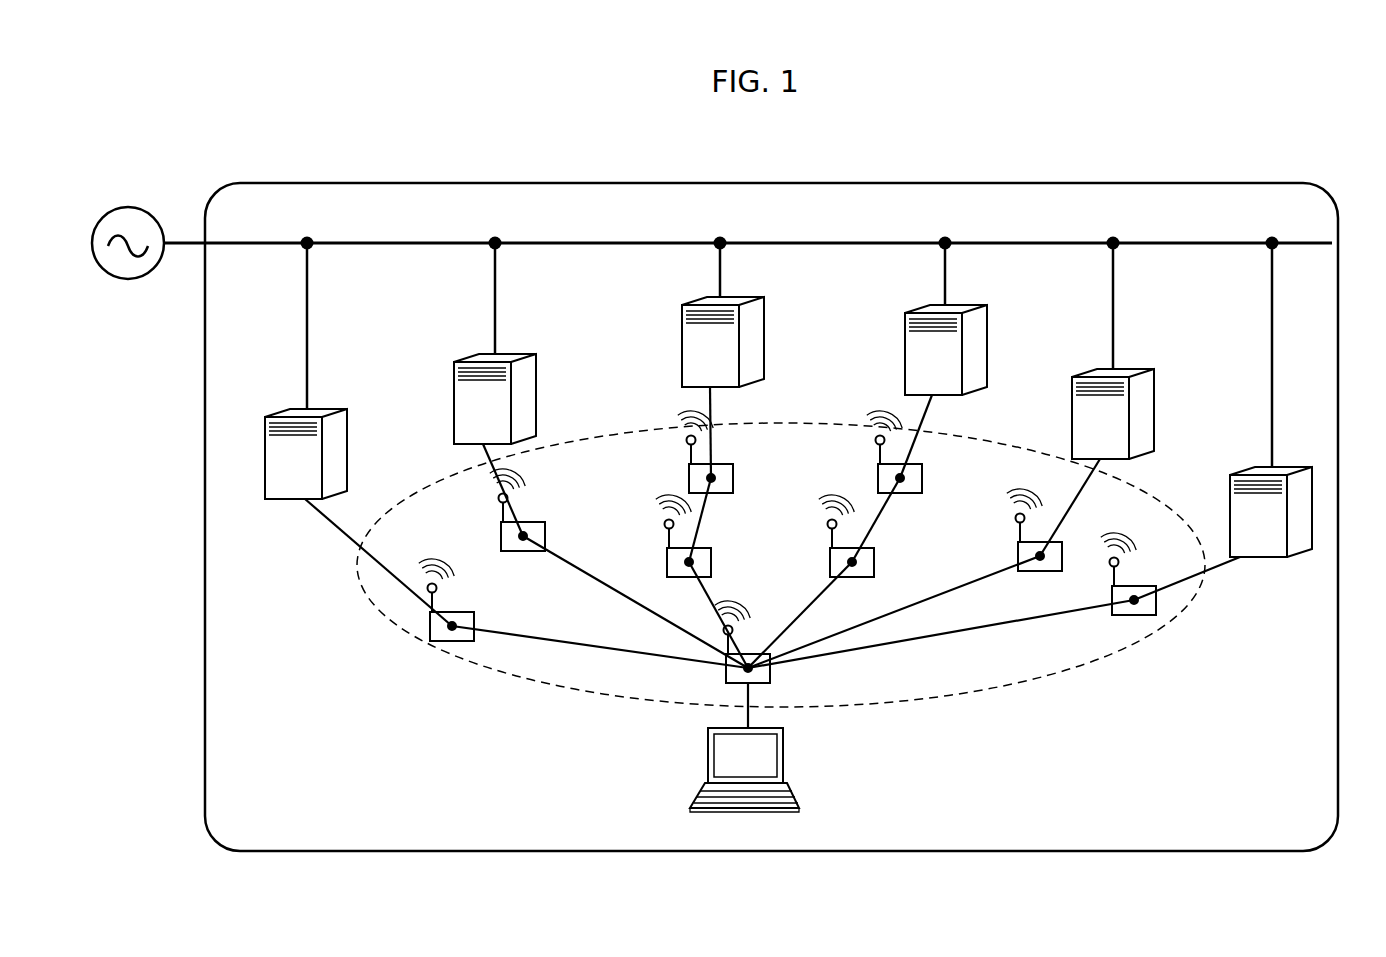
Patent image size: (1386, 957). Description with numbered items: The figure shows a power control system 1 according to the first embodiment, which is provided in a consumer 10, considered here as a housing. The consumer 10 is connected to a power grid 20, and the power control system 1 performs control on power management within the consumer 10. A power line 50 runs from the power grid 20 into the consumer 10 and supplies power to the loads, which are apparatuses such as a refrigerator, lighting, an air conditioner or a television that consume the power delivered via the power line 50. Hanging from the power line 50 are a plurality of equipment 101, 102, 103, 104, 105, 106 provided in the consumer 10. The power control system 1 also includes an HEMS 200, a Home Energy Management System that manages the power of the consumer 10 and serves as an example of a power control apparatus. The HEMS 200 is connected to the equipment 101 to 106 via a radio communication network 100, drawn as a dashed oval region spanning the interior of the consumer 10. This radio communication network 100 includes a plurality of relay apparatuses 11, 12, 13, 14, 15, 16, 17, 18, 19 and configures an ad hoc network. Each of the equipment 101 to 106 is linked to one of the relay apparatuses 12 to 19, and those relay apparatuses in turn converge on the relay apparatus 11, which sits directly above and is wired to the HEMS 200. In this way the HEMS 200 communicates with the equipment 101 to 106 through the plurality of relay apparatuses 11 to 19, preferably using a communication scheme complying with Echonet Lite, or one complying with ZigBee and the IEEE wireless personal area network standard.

The power control system 1 is at (1112, 168).
The consumer 10 is at (623, 183).
The power grid 20 is at (129, 207).
The power line 50 is at (578, 247).
The relay apparatus 11 is at (770, 676).
The relay apparatus 12 is at (475, 617).
The relay apparatus 13 is at (545, 530).
The relay apparatus 14 is at (711, 561).
The relay apparatus 15 is at (733, 478).
The relay apparatus 16 is at (874, 562).
The relay apparatus 17 is at (922, 478).
The relay apparatus 18 is at (1036, 571).
The relay apparatus 19 is at (1148, 586).
The radio communication network 100 is at (886, 706).
The equipment 101 is at (282, 492).
The equipment 102 is at (454, 374).
The equipment 103 is at (681, 320).
The equipment 104 is at (905, 324).
The equipment 105 is at (1155, 392).
The equipment 106 is at (1277, 543).
The HEMS 200 is at (744, 785).